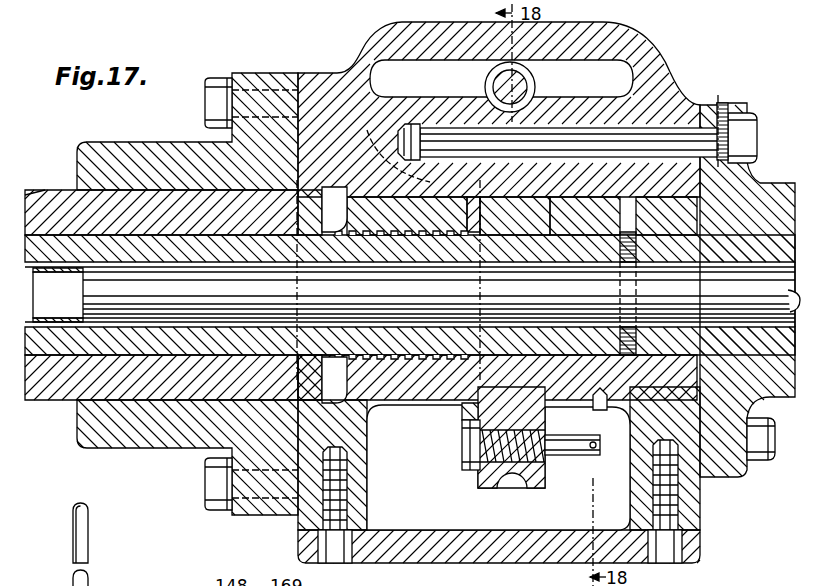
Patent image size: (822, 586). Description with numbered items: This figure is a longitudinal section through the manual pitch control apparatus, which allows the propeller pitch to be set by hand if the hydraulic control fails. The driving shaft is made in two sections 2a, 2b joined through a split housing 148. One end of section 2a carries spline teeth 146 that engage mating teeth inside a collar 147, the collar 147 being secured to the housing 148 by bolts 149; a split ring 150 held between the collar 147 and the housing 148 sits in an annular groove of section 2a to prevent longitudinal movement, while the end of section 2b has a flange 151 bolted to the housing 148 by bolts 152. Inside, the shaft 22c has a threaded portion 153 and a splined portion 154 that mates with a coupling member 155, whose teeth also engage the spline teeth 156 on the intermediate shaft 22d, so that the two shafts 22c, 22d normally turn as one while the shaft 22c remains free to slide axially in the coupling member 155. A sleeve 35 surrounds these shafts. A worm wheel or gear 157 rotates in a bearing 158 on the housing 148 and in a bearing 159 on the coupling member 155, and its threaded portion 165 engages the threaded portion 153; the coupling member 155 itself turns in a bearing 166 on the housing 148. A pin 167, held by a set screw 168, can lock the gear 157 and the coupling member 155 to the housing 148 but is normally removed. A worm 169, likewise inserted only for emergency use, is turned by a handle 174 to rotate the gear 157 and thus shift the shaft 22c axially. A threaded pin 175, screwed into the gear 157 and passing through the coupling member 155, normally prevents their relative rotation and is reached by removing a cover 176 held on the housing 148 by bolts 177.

The driving shaft section 2a is at (40, 196).
The driving shaft section 2b is at (760, 188).
The shaft 22c is at (136, 247).
The intermediate shaft 22d is at (736, 250).
The sleeve 35 is at (48, 402).
The spline teeth 146 is at (83, 430).
The collar 147 is at (150, 440).
The split housing 148 is at (322, 78).
The bolts 149 is at (218, 105).
The split ring 150 is at (285, 520).
The flange 151 is at (715, 482).
The bolts 152 is at (760, 482).
The threaded portion 153 is at (370, 232).
The spline portion 154 is at (518, 232).
The coupling member 155 is at (595, 235).
The spline teeth 156 is at (660, 237).
The worm wheel or gear 157 is at (507, 480).
The bearing 158 is at (384, 395).
The bearing 159 is at (470, 412).
The threaded portion 165 is at (342, 232).
The bearing 166 is at (600, 410).
The pin 167 is at (652, 138).
The set screw 168 is at (722, 100).
The worm 169 is at (537, 92).
The handle 174 is at (90, 558).
The threaded pin 175 is at (465, 455).
The cover 176 is at (445, 545).
The bolts 177 is at (352, 490).